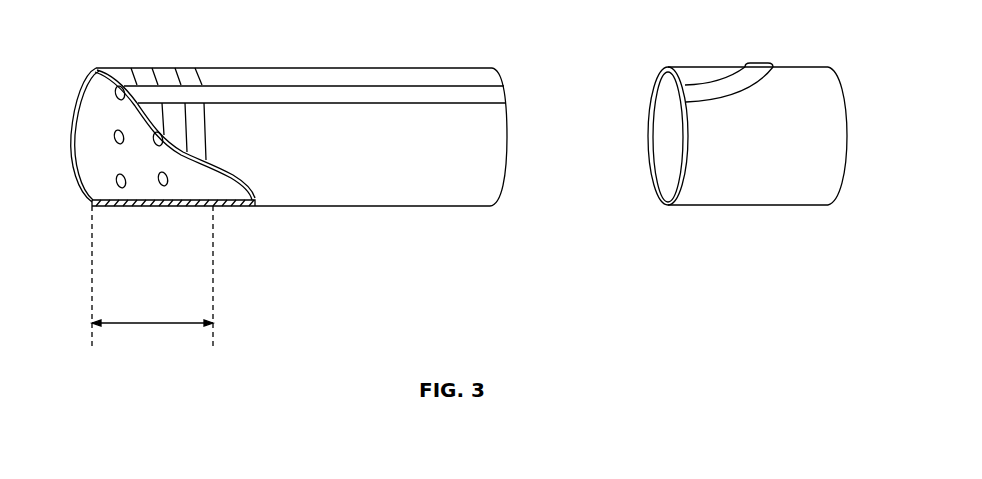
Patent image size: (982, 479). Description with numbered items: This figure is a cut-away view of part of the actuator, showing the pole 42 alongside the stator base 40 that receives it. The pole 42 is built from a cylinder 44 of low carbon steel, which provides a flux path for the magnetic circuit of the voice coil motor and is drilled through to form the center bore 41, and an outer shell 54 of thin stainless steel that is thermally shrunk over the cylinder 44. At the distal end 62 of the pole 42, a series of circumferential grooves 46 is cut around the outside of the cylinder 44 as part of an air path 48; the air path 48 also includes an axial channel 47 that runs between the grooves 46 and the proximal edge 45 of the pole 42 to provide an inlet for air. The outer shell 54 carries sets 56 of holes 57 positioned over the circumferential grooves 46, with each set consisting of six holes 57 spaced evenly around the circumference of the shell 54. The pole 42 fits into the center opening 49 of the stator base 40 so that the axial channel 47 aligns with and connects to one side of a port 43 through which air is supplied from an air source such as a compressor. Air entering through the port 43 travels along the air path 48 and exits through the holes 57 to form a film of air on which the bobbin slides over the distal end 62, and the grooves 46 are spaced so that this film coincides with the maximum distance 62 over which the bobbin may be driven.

The stator base 40 is at (835, 140).
The center bore 41 is at (98, 145).
The pole 42 is at (192, 218).
The port 43 is at (702, 92).
The cylinder 44 is at (400, 192).
The proximal edge 45 is at (508, 111).
The circumferential grooves 46 is at (186, 76).
The axial channel 47 is at (345, 97).
The air path 48 is at (425, 63).
The center opening 49 is at (675, 183).
The outer shell 54 is at (236, 205).
The sets of holes 56 is at (155, 204).
The holes 57 is at (117, 181).
The distal end 62 is at (131, 321).